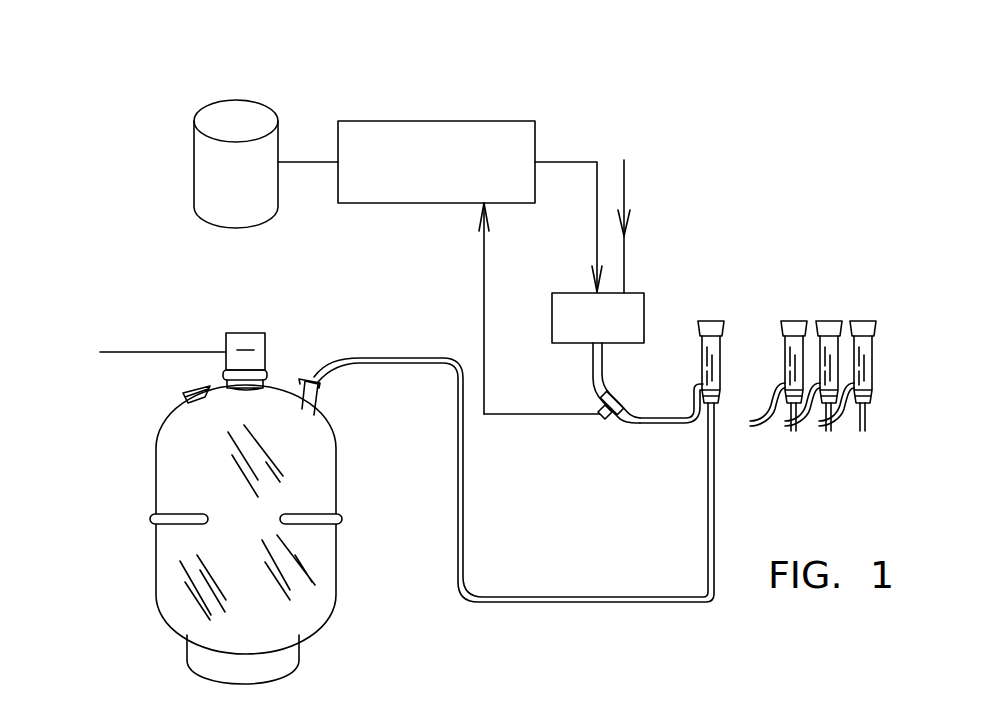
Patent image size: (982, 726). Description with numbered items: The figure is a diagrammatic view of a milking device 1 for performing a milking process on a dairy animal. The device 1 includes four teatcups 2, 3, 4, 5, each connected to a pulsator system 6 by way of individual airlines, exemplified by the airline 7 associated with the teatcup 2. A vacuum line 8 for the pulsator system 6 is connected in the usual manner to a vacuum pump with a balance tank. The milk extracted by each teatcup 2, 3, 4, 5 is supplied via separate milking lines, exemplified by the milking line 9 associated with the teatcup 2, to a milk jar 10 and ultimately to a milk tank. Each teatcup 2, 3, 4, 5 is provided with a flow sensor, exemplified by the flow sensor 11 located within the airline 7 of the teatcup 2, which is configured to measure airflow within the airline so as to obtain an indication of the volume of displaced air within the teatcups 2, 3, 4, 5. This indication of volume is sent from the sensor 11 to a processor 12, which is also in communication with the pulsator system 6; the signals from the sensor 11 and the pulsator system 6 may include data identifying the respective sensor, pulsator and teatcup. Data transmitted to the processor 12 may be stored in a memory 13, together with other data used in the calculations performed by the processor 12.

The milking device 1 is at (108, 155).
The teatcup 2 is at (711, 321).
The teatcup 3 is at (794, 321).
The teatcup 4 is at (829, 321).
The teatcup 5 is at (863, 321).
The pulsator system 6 is at (644, 293).
The airline 7 is at (667, 421).
The vacuum line 8 is at (624, 182).
The milking line 9 is at (503, 601).
The milk jar 10 is at (156, 482).
The flow sensor 11 is at (605, 421).
The processor 12 is at (437, 121).
The memory 13 is at (194, 160).